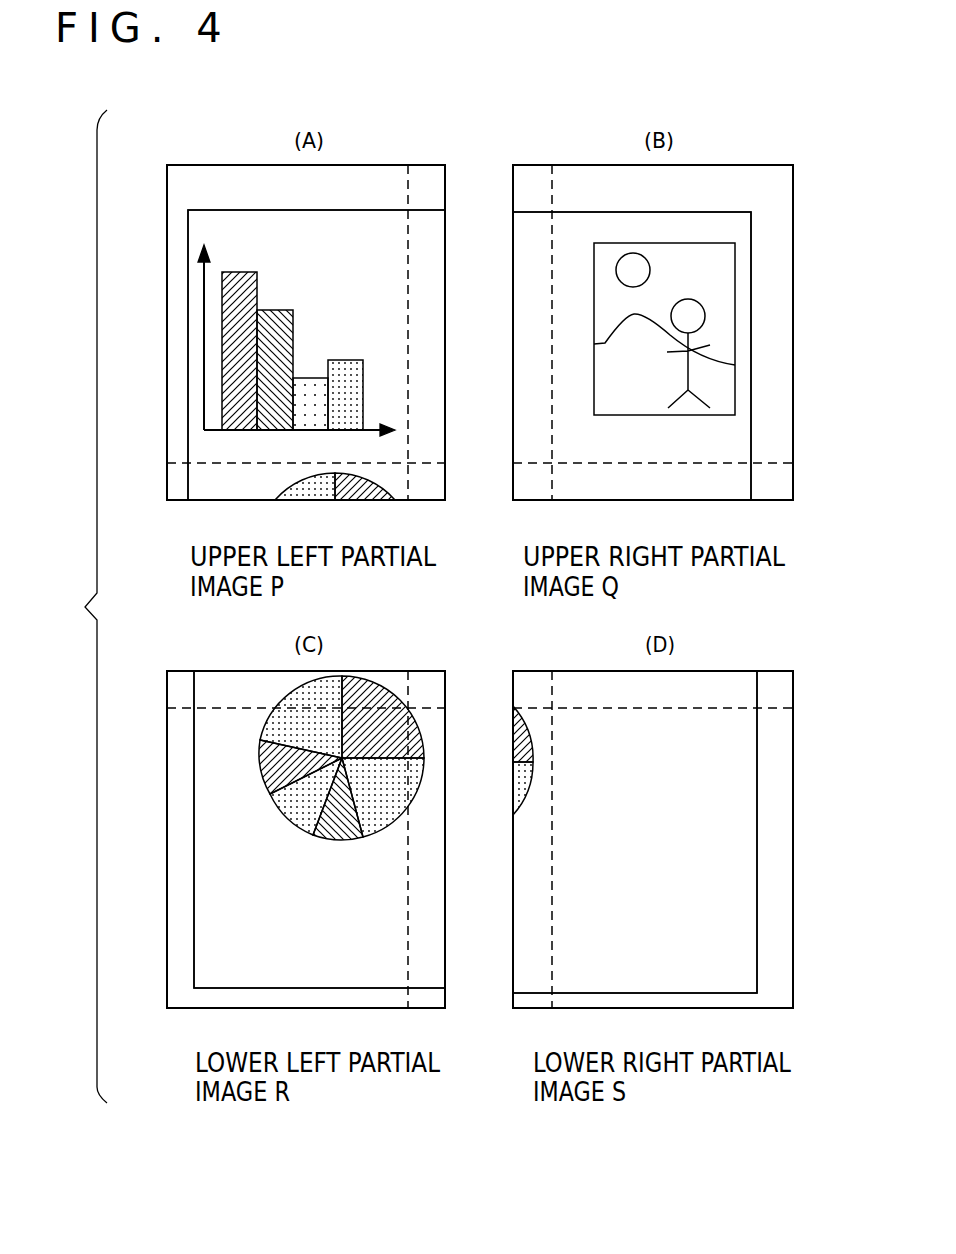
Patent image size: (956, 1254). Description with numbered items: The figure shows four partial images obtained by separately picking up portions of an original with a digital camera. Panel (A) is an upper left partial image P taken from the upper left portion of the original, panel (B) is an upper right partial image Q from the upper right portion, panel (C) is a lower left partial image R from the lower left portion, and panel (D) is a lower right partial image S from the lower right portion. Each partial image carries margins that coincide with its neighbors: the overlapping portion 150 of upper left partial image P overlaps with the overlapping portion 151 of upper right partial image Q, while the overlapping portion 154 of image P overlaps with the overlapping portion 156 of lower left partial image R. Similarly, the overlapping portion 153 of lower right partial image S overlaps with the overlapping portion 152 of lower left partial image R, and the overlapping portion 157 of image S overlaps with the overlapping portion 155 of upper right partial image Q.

The overlapping portion 150 is at (430, 264).
The overlapping portion 151 is at (524, 327).
The overlapping portion 152 is at (428, 805).
The overlapping portion 153 is at (527, 859).
The overlapping portion 154 is at (215, 489).
The overlapping portion 155 is at (562, 496).
The overlapping portion 156 is at (232, 683).
The overlapping portion 157 is at (567, 685).